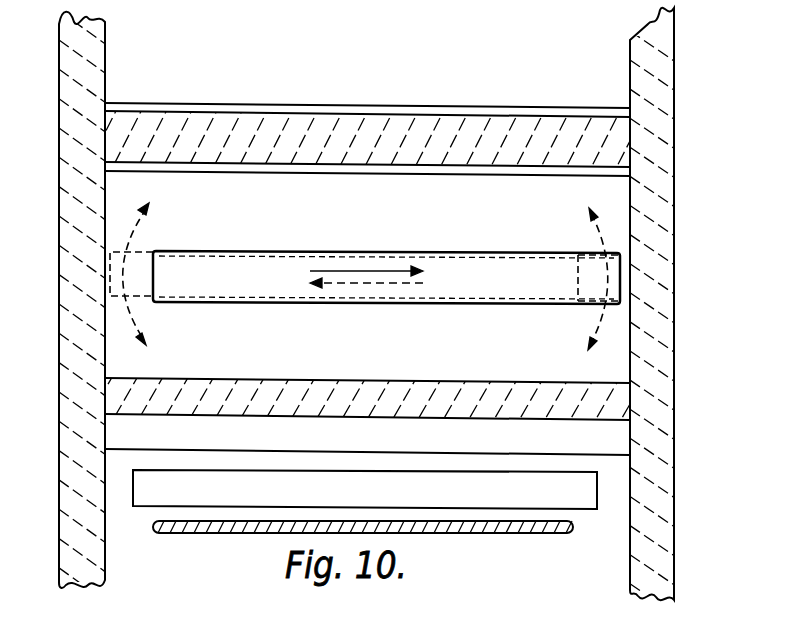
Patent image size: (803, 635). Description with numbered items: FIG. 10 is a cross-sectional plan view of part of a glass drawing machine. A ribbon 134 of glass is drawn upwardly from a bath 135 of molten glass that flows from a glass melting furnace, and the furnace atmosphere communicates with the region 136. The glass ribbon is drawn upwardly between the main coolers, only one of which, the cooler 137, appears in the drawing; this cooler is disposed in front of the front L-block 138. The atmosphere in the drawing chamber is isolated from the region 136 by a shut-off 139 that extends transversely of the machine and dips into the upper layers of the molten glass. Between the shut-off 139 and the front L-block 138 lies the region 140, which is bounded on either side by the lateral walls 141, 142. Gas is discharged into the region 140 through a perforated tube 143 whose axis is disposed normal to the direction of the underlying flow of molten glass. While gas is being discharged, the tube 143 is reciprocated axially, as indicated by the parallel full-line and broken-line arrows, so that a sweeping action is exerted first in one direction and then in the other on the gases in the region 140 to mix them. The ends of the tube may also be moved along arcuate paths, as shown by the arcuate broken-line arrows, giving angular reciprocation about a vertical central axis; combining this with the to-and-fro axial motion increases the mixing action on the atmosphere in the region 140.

The ribbon of glass 134 is at (225, 527).
The bath of molten glass 135 is at (502, 591).
The region 136 is at (348, 73).
The main cooler 137 is at (185, 487).
The front L-block 138 is at (582, 429).
The shut-off 139 is at (426, 147).
The region 140 is at (344, 222).
The lateral wall 141 is at (80, 264).
The lateral wall 142 is at (653, 268).
The perforated tube 143 is at (487, 282).